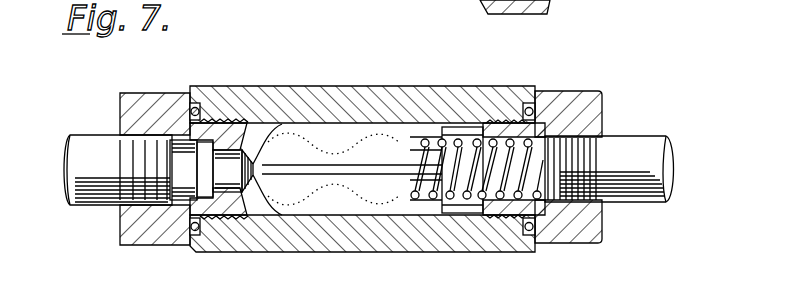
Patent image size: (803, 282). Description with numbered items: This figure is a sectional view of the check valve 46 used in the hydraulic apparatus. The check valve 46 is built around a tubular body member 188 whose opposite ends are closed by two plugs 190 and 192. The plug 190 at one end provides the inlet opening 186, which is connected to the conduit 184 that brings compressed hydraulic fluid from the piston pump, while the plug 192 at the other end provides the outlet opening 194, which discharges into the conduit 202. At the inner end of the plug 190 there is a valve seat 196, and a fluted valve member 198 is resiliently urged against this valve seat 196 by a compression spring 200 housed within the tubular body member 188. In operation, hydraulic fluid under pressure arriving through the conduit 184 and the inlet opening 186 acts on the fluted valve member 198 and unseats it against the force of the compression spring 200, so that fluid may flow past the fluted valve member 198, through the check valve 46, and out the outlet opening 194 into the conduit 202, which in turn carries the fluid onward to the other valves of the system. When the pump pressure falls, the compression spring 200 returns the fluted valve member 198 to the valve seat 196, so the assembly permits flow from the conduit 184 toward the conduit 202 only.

The check valve 46 is at (363, 86).
The conduit 184 is at (93, 142).
The inlet opening 186 is at (178, 200).
The tubular body member 188 is at (403, 98).
The plug 190 is at (160, 100).
The plug 192 is at (573, 96).
The outlet opening 194 is at (563, 195).
The valve seat 196 is at (235, 203).
The fluted valve member 198 is at (316, 207).
The compression spring 200 is at (472, 200).
The conduit 202 is at (645, 138).